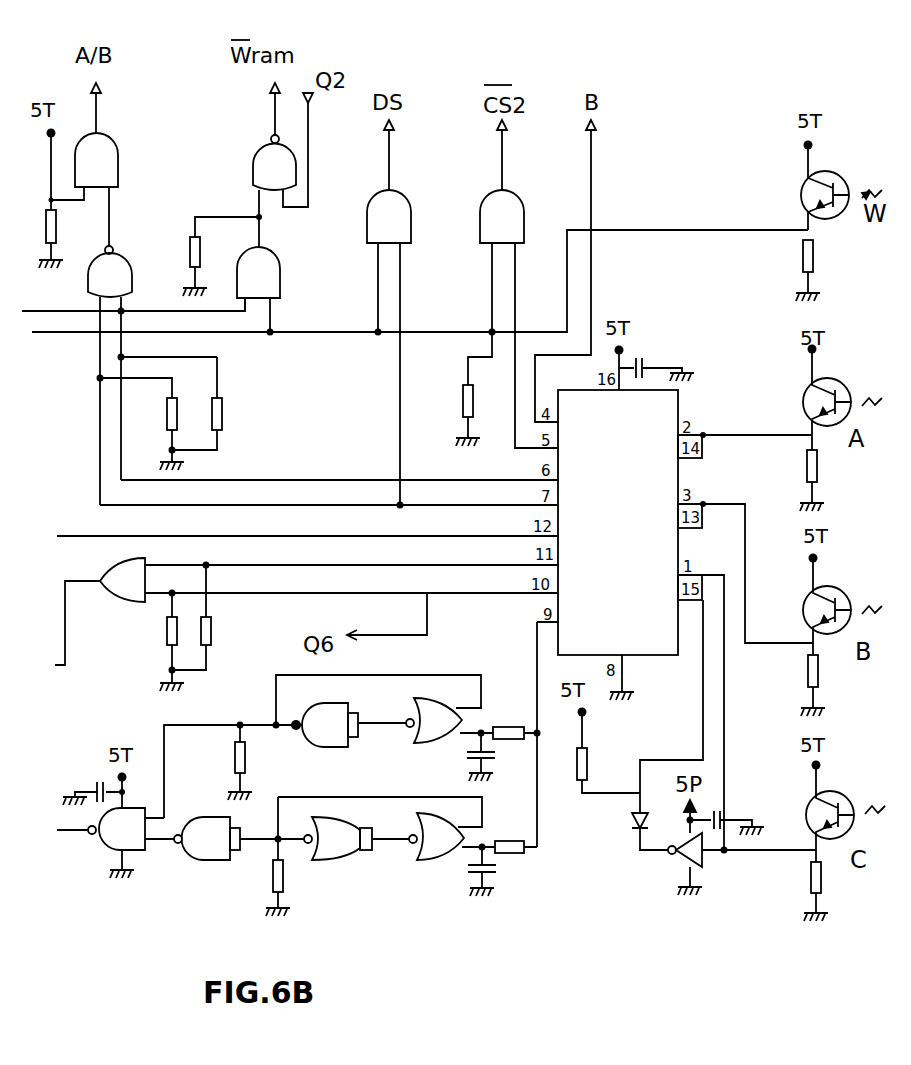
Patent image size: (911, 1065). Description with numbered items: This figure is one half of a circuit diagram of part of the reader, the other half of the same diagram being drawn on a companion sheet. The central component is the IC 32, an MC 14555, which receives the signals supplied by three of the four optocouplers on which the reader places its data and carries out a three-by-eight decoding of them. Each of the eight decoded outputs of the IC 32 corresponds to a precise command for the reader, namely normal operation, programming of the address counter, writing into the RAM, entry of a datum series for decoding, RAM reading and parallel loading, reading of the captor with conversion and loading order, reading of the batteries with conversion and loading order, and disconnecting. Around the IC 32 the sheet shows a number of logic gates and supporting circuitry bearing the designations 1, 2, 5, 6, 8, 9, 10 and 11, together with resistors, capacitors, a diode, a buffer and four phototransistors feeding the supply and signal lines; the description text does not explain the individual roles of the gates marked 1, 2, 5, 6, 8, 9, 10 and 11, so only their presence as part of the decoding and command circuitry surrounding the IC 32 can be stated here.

The NAND gate 1 (chip select) 1 is at (502, 216).
The flip-flop gate 2 is at (228, 781).
The gate 5 is at (258, 272).
The gate 6 (data strobe) 6 is at (389, 216).
The gate 8 (A/B select) 8 is at (96, 160).
The OR gate 9 is at (122, 580).
The NAND gate 10 is at (192, 221).
The NOR gate 11 is at (388, 779).
The IC 32 is at (618, 522).